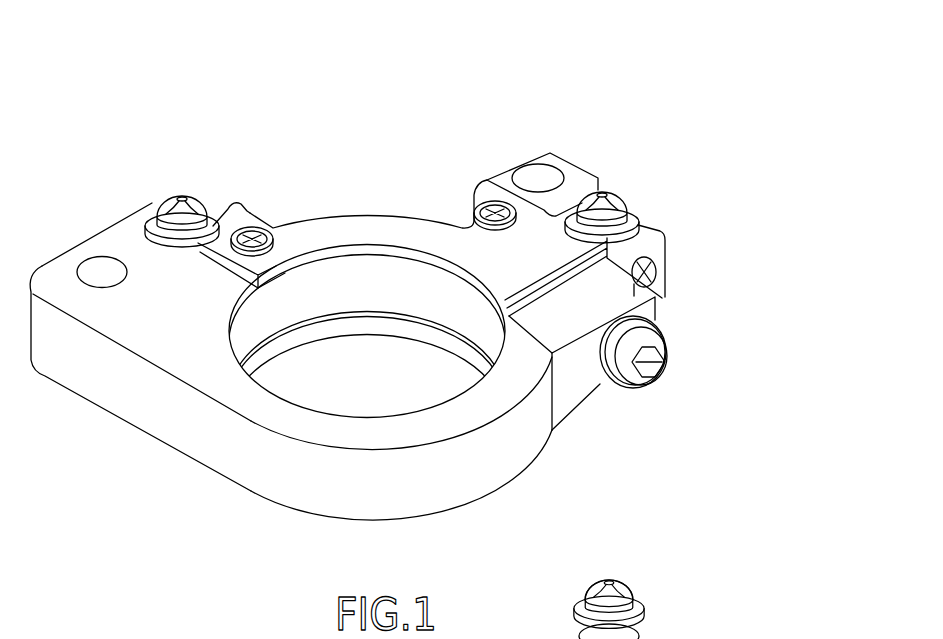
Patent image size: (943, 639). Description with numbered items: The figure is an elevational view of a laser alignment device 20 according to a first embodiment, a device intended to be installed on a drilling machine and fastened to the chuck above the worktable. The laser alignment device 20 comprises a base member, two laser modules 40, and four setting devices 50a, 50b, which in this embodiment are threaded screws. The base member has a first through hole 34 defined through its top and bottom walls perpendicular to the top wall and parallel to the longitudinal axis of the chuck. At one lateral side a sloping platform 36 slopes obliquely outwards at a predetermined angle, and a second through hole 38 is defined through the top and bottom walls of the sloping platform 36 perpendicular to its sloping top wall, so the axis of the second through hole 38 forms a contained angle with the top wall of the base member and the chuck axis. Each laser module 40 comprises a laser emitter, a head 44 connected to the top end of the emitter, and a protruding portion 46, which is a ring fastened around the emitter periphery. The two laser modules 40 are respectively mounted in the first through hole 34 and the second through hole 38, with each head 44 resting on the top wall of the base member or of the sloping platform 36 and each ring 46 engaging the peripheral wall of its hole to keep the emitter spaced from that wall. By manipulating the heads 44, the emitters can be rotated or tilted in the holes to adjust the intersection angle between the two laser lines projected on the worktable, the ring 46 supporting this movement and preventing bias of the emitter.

The laser alignment device 20 is at (531, 81).
The first through hole 34 is at (148, 236).
The sloping platform 36 is at (647, 221).
The second through hole 38 is at (662, 241).
The laser module 40 is at (167, 201).
The head 44 is at (643, 603).
The protruding portion 46 is at (650, 631).
The setting device 50a is at (240, 206).
The setting device 50b is at (652, 280).